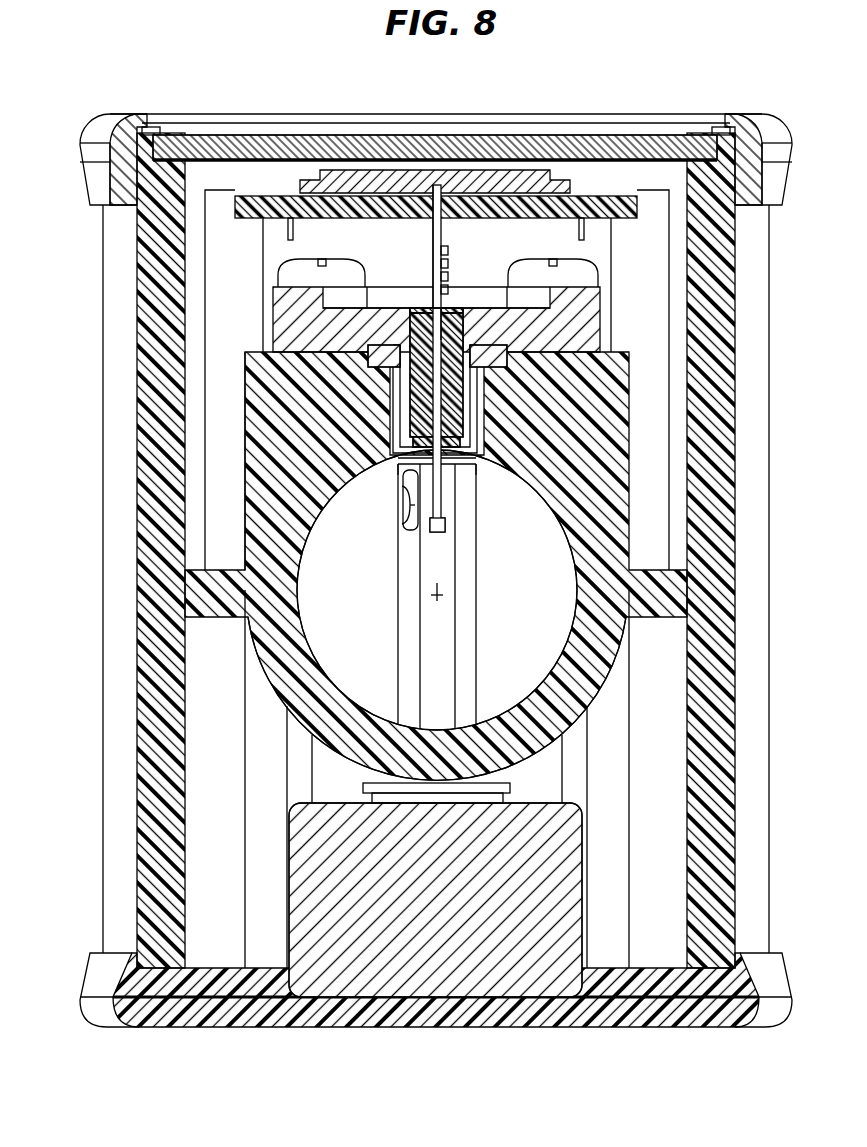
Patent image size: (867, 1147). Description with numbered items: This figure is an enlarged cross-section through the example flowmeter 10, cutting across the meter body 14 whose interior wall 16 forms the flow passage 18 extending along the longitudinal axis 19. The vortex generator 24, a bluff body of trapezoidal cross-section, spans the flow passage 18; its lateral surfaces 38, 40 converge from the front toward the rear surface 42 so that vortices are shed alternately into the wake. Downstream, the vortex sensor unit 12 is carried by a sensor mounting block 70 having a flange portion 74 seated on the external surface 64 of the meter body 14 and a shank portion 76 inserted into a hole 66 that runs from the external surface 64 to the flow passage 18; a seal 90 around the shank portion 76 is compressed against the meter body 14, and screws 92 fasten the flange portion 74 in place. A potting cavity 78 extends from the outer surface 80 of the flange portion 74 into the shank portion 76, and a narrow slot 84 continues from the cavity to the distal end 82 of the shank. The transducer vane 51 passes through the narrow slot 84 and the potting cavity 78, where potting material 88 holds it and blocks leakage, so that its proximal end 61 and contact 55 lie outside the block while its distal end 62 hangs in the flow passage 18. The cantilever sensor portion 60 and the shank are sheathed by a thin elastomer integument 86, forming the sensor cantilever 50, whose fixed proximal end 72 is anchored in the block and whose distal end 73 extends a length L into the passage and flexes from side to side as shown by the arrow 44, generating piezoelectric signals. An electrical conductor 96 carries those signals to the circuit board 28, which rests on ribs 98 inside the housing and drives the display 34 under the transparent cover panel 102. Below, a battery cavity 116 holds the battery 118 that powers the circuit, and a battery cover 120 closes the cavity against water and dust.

The flowmeter 10 is at (141, 103).
The vortex sensor unit 12 is at (392, 402).
The meter body 14 is at (243, 538).
The interior wall 16 is at (313, 540).
The flow passage 18 is at (369, 618).
The longitudinal axis 19 is at (440, 597).
The vortex generator 24 is at (478, 663).
The circuit board 28 is at (600, 194).
The display 34 is at (347, 150).
The lateral surface 38 is at (470, 695).
The lateral surface 40 is at (403, 657).
The rear surface 42 is at (427, 665).
The arrow 44 is at (446, 531).
The sensor cantilever 50 is at (452, 497).
The transducer vane 51 is at (432, 480).
The contact 55 is at (449, 260).
The cantilever sensor portion 60 is at (545, 505).
The proximal end 61 is at (445, 258).
The distal end 62 is at (420, 537).
The external surface 64 is at (300, 350).
The hole 66 is at (410, 345).
The sensor mounting block 70 is at (414, 292).
The proximal end 72 is at (442, 468).
The distal end 73 is at (436, 573).
The flange portion 74 is at (251, 385).
The shank portion 76 is at (470, 400).
The potting cavity 78 is at (452, 320).
The outer surface 80 is at (372, 286).
The distal end 82 is at (400, 465).
The narrow slot 84 is at (462, 445).
The elastomer integument 86 is at (450, 460).
The potting material 88 is at (408, 305).
The seal 90 is at (590, 351).
The screws 92 is at (280, 259).
The electrical conductor 96 is at (447, 190).
The ribs 98 is at (252, 200).
The transparent cover panel 102 is at (650, 134).
The battery cavity 116 is at (288, 925).
The battery 118 is at (468, 1003).
The battery cover 120 is at (640, 1028).